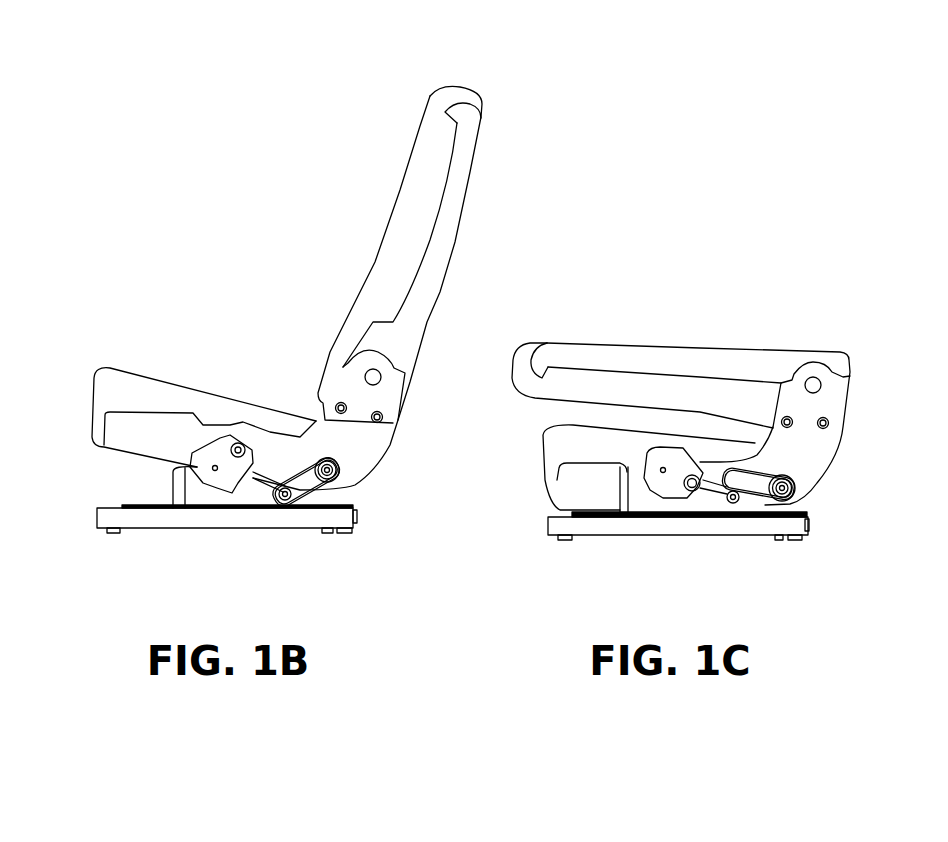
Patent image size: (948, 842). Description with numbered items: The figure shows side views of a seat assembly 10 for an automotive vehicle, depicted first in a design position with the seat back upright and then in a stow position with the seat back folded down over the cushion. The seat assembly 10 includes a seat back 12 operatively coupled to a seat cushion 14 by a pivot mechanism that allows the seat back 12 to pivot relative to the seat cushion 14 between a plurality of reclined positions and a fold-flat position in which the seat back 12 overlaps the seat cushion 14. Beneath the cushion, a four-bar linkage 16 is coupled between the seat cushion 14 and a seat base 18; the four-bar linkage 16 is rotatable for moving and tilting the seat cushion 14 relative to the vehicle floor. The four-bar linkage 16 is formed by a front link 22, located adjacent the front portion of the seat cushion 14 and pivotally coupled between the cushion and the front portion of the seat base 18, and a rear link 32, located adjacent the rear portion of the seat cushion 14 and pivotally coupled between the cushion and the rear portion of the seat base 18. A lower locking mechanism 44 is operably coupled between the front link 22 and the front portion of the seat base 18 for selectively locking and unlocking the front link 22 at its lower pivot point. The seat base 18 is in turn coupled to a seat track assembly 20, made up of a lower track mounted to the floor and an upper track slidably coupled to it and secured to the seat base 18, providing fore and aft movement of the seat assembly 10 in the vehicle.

In FIG. 1B, the seat assembly 10 is at (247, 331).
In FIG. 1C, the seat assembly 10 is at (686, 305).
In FIG. 1B, the seat back 12 is at (458, 208).
In FIG. 1C, the seat back 12 is at (770, 348).
In FIG. 1B, the seat cushion 14 is at (92, 423).
In FIG. 1C, the seat cushion 14 is at (542, 478).
In FIG. 1B, the four-bar linkage 16 is at (292, 455).
In FIG. 1C, the four-bar linkage 16 is at (752, 467).
In FIG. 1B, the seat base 18 is at (292, 508).
In FIG. 1C, the seat base 18 is at (710, 513).
In FIG. 1B, the seat track assembly 20 is at (212, 552).
In FIG. 1C, the seat track assembly 20 is at (666, 558).
In FIG. 1B, the front link 22 is at (190, 473).
In FIG. 1C, the front link 22 is at (642, 497).
In FIG. 1B, the rear link 32 is at (298, 497).
In FIG. 1C, the rear link 32 is at (780, 498).
In FIG. 1B, the lower locking mechanism 44 is at (217, 437).
In FIG. 1C, the lower locking mechanism 44 is at (650, 452).